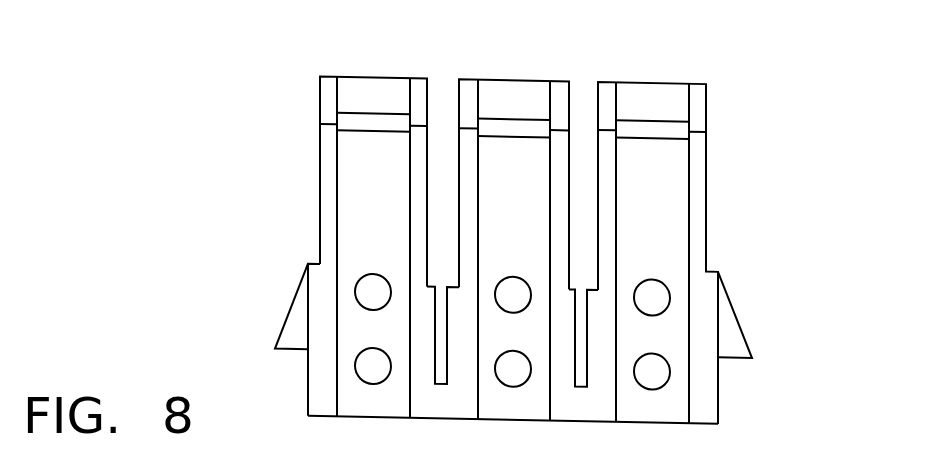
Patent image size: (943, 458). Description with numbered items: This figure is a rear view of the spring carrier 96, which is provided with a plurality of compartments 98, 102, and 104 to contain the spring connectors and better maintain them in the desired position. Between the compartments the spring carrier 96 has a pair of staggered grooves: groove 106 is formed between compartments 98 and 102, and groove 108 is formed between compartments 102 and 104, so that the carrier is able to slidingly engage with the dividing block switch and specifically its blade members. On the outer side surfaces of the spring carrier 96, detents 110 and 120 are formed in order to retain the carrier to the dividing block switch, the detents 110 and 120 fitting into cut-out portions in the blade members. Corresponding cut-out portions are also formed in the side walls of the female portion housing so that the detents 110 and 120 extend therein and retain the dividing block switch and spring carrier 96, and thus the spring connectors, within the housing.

The spring carrier 96 is at (756, 153).
The compartment 98 is at (646, 80).
The compartment 102 is at (506, 78).
The compartment 104 is at (370, 73).
The staggered groove 106 is at (569, 209).
The staggered groove 108 is at (431, 208).
The detent 110 is at (728, 342).
The detent 120 is at (295, 330).